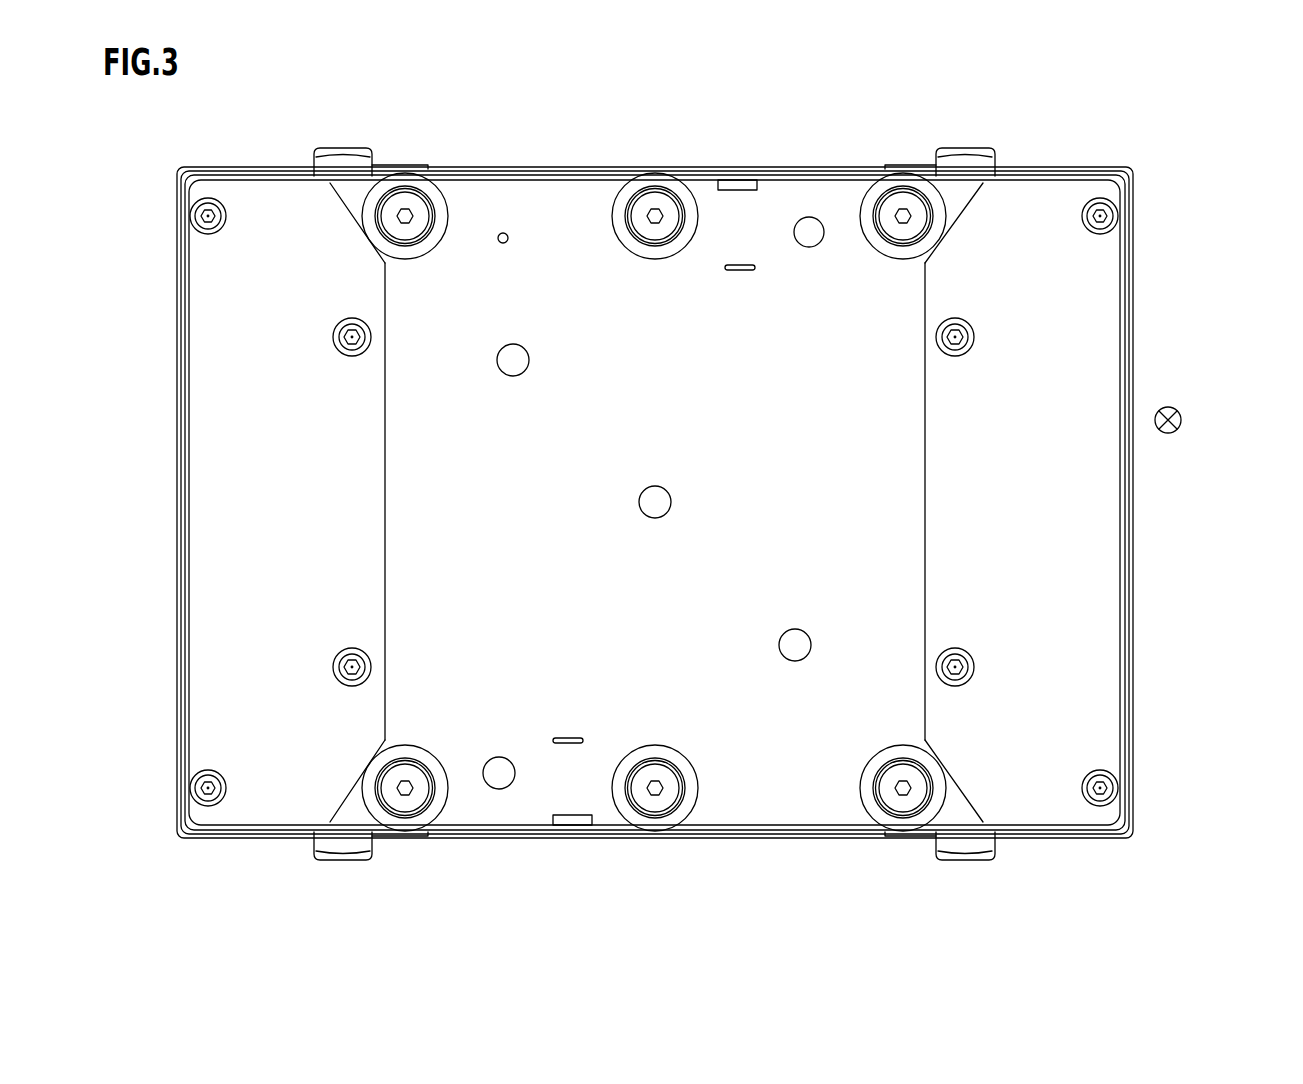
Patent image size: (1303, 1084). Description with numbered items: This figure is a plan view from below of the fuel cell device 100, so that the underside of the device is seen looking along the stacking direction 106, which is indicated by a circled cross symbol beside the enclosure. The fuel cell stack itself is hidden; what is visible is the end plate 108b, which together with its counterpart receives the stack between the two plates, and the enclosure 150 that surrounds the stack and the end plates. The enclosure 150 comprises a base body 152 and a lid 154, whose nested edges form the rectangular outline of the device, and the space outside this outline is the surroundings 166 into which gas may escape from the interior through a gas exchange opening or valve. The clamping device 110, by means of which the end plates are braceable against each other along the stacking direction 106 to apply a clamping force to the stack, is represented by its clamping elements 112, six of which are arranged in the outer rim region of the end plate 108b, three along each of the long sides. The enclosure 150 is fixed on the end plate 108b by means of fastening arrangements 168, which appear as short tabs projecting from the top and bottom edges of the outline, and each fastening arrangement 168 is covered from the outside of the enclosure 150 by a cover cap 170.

The fuel cell device 100 is at (1143, 223).
The stacking direction 106 is at (1181, 418).
The end plate 108b is at (1083, 582).
The clamping device 110 is at (455, 207).
The clamping element 112 is at (452, 228).
The enclosure 150 is at (1143, 288).
The base body 152 is at (1133, 497).
The lid 154 is at (1133, 343).
The surroundings 166 is at (1241, 683).
The fastening arrangement 168 is at (325, 142).
The cover cap 170 is at (350, 156).